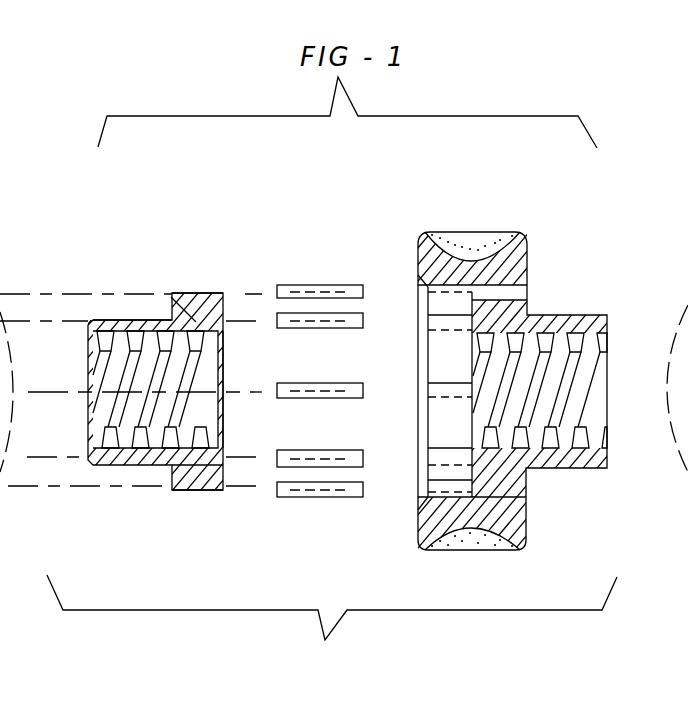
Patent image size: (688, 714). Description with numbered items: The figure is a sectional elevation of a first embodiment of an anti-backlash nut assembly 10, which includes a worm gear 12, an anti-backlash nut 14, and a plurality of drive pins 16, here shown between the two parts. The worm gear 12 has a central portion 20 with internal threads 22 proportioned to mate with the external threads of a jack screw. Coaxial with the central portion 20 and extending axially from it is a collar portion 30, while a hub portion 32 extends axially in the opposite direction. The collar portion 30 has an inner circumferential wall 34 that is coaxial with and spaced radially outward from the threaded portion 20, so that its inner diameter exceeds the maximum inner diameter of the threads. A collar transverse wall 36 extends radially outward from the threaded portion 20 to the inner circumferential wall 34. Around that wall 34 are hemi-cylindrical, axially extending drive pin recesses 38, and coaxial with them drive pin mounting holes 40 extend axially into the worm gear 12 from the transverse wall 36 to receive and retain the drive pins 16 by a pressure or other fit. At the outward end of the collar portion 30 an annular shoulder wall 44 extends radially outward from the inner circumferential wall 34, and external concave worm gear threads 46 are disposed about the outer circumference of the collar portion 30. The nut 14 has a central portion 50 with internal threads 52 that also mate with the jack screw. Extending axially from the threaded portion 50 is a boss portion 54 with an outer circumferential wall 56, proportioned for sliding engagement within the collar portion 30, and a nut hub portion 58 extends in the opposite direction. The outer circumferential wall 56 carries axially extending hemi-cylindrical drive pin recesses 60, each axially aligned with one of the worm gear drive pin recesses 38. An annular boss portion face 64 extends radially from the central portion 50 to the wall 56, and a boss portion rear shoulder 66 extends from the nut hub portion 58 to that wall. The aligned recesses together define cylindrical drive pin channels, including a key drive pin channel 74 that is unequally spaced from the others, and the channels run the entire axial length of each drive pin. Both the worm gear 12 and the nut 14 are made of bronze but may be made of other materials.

The anti-backlash nut assembly 10 is at (332, 377).
The worm gear 12 is at (515, 521).
The anti-backlash nut 14 is at (94, 465).
The drive pins 16 is at (323, 390).
The central portion 20 is at (578, 358).
The internal threads 22 is at (574, 431).
The collar portion 30 is at (432, 258).
The hub portion 32 is at (564, 330).
The inner circumferential wall 34 is at (445, 420).
The collar transverse wall 36 is at (470, 342).
The drive pin recesses 38 is at (441, 457).
The drive pin mounting holes 40 is at (515, 490).
The annular shoulder wall 44 is at (413, 520).
The external concave worm gear threads 46 is at (478, 244).
The central portion 50 is at (123, 356).
The internal threads 52 is at (137, 403).
The boss portion 54 is at (175, 293).
The outer circumferential wall 56 is at (207, 490).
The nut hub portion 58 is at (118, 330).
The drive pin recesses 60 is at (197, 294).
The annular boss portion face 64 is at (231, 441).
The boss portion rear shoulder 66 is at (168, 472).
The key drive pin channel 74 is at (344, 390).